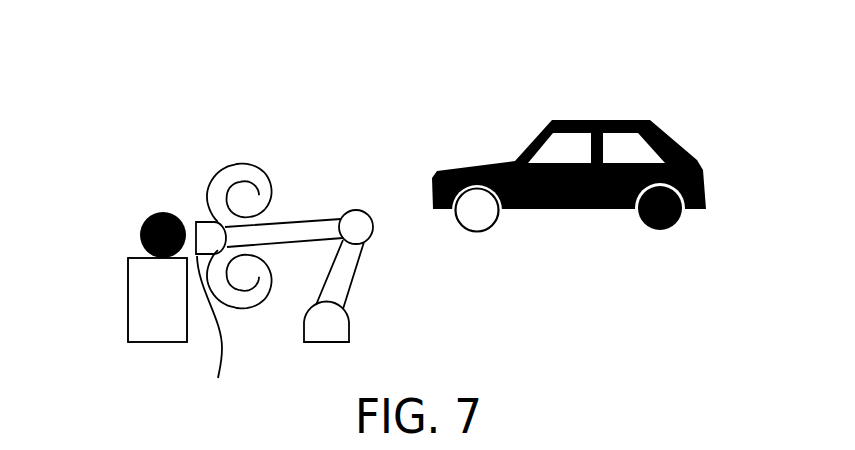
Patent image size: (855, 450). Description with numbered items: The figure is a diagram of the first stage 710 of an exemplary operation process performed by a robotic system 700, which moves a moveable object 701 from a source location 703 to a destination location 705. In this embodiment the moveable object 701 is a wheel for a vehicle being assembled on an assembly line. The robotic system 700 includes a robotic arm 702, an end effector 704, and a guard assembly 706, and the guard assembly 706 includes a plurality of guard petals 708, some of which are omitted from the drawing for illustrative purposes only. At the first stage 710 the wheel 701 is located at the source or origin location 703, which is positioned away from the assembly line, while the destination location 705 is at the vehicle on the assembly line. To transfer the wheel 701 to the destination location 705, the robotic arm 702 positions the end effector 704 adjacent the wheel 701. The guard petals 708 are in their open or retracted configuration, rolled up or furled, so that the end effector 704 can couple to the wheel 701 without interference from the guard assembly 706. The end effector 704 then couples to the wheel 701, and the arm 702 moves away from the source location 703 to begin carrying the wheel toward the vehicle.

The robotic system 700 is at (114, 161).
The moveable object 701 is at (142, 230).
The robotic arm 702 is at (352, 275).
The source location 703 is at (128, 297).
The end effector 704 is at (215, 332).
The destination location 705 is at (497, 220).
The guard assembly 706 is at (224, 131).
The guard petals 708 is at (268, 174).
The first stage 710 is at (686, 99).